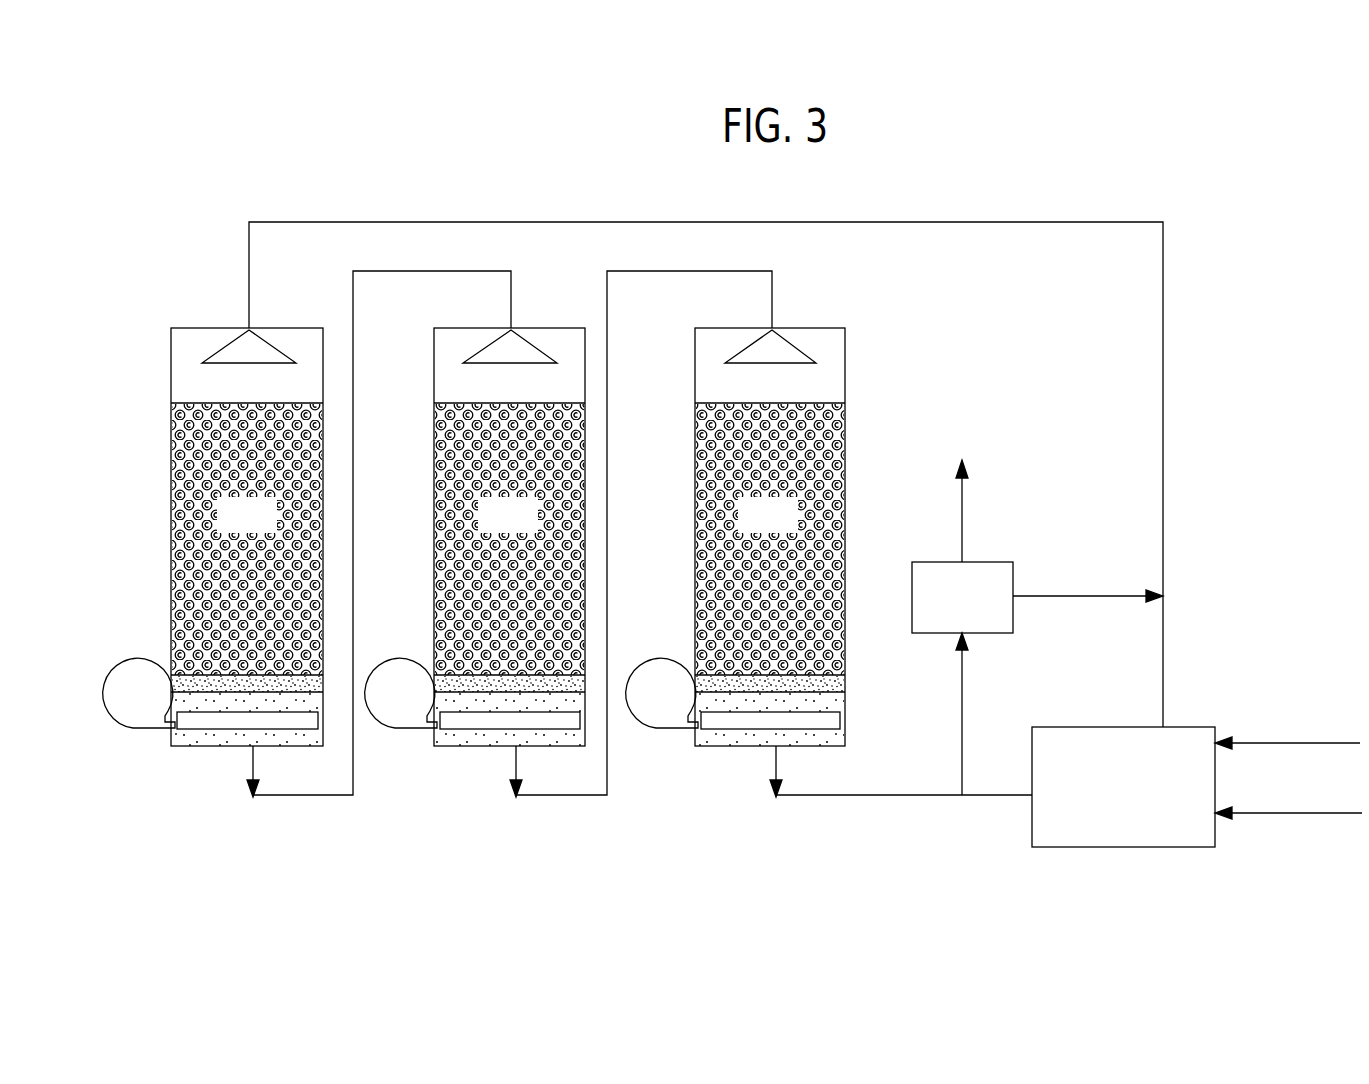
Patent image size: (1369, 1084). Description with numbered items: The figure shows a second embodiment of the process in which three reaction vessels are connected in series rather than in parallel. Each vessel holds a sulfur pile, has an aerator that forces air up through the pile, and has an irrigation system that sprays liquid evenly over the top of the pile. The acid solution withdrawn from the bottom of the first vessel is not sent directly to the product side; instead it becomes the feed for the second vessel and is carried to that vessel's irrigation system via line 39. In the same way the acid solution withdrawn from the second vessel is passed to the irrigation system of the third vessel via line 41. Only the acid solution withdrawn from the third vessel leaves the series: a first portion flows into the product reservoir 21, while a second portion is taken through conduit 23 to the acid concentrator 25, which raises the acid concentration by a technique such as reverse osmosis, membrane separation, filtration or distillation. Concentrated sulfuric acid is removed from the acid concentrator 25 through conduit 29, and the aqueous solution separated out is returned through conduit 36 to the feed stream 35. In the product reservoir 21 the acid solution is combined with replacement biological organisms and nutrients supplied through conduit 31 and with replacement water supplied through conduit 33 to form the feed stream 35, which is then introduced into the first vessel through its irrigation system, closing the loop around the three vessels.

The product reservoir 21 is at (1125, 848).
The conduit 23 is at (960, 722).
The acid concentrator 25 is at (1013, 572).
The conduit 29 is at (962, 517).
The conduit 31 is at (1296, 741).
The conduit 33 is at (1294, 816).
The feed stream 35 is at (1163, 384).
The conduit 36 is at (1082, 600).
The line 39 is at (353, 310).
The line 41 is at (607, 310).